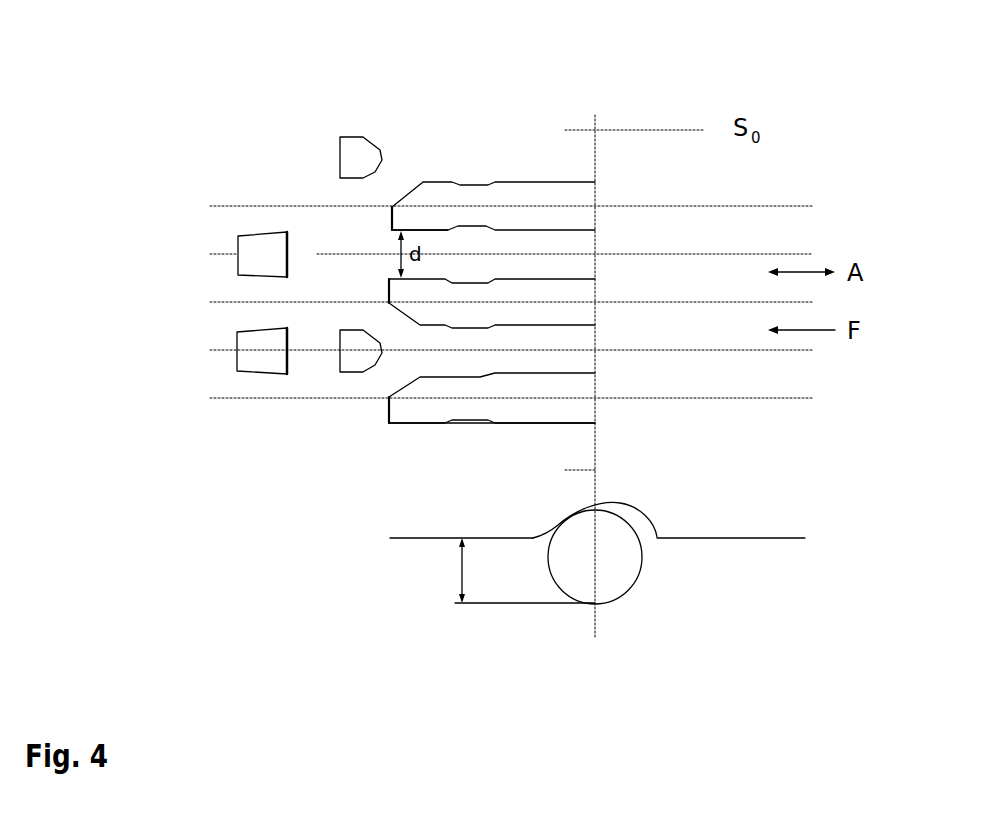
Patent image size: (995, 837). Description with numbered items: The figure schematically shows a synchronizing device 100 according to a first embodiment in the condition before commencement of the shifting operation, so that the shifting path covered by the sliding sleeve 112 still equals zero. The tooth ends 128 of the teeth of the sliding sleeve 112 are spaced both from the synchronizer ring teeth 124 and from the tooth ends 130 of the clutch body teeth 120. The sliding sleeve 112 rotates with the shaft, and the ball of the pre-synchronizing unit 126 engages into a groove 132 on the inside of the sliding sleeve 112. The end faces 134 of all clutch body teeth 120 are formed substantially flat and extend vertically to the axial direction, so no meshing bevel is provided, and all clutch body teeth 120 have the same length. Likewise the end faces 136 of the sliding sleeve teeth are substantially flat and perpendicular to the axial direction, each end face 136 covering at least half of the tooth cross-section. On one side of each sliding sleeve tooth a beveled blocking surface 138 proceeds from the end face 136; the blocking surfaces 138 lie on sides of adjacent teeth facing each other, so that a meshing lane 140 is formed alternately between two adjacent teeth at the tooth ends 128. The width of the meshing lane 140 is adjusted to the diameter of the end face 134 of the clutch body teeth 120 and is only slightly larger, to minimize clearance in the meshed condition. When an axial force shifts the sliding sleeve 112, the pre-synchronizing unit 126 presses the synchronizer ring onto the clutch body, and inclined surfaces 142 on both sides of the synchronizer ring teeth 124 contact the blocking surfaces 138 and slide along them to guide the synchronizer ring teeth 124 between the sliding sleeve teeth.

The synchronizing device 100 is at (86, 172).
The sliding sleeve 112 is at (523, 438).
The clutch body teeth 120 is at (256, 238).
The synchronizer ring teeth 124 is at (355, 155).
The pre-synchronizing unit 126 is at (613, 583).
The tooth ends 128 is at (402, 434).
The tooth ends of the clutch body teeth 130 is at (268, 386).
The groove 132 is at (657, 537).
The end faces of the clutch body teeth 134 is at (288, 236).
The end faces of the sliding sleeve teeth 136 is at (387, 207).
The blocking surface 138 is at (403, 320).
The meshing lane 140 is at (437, 247).
The inclined surfaces 142 is at (380, 144).